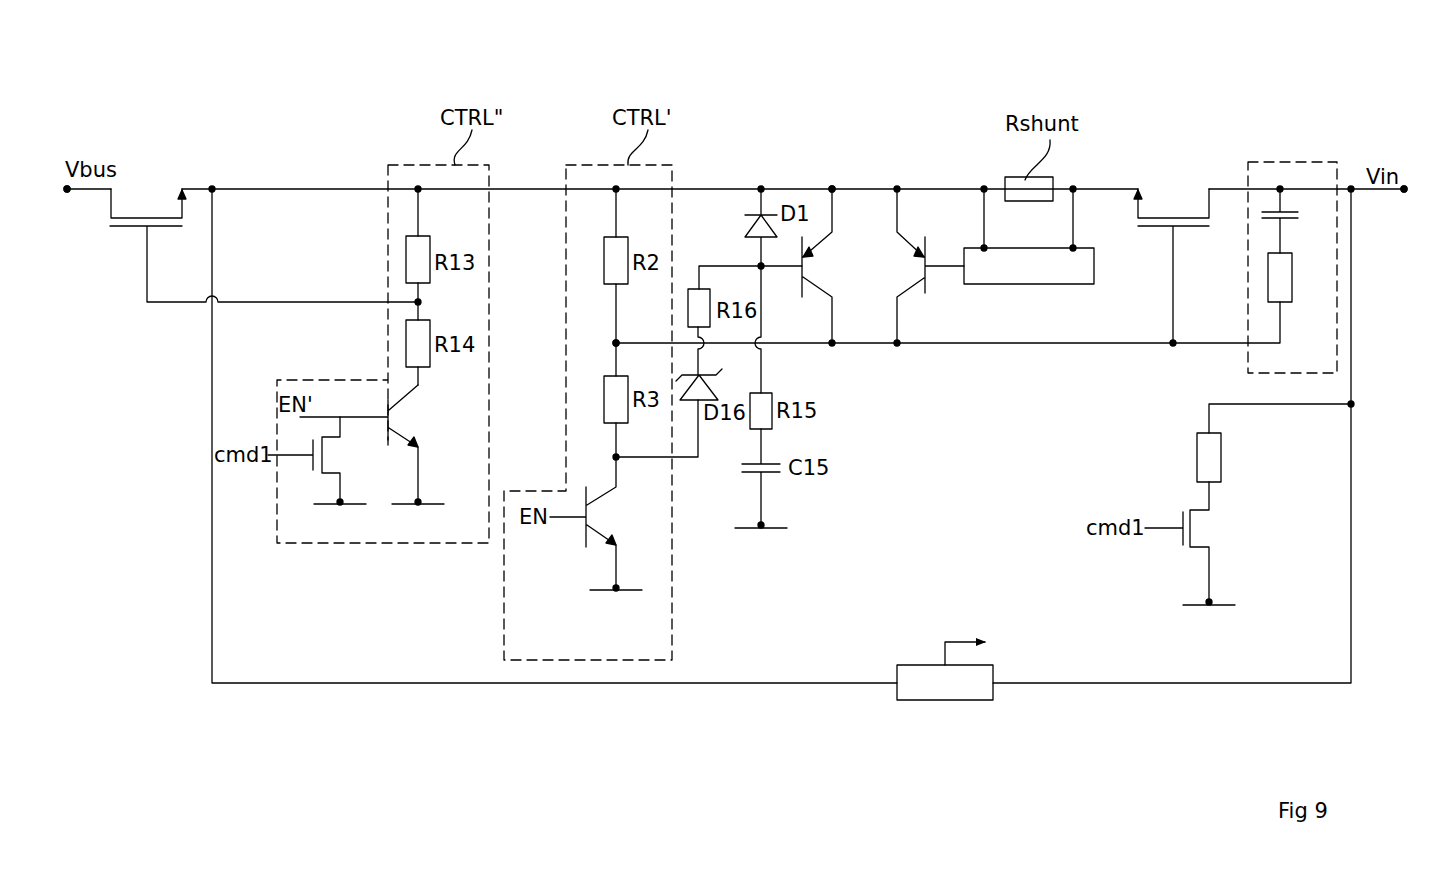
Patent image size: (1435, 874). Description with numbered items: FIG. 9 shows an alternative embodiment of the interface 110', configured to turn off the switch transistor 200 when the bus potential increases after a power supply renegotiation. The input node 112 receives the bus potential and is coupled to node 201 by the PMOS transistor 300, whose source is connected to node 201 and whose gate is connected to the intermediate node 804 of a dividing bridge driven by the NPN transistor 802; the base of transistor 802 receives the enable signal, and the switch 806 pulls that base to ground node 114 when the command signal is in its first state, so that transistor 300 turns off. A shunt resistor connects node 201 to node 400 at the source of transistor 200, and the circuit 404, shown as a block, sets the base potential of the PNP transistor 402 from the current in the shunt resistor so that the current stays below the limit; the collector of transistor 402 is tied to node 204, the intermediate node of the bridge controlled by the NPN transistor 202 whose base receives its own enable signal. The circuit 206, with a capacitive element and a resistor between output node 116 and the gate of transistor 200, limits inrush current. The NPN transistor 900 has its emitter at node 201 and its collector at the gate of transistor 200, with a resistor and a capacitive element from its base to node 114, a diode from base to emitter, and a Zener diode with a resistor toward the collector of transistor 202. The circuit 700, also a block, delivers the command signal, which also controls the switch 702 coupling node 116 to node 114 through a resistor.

The interface 110' is at (184, 71).
The node 112 is at (69, 194).
The node 116 is at (1404, 194).
The node 114 is at (338, 502).
The PMOS transistor 300 is at (143, 205).
The intermediate node 804 is at (421, 302).
The NPN transistor 802 is at (397, 417).
The switch 806 is at (306, 435).
The intermediate node 204 is at (618, 341).
The NPN transistor 202 is at (598, 516).
The node 201 is at (832, 186).
The NPN transistor 900 is at (817, 260).
The PNP transistor 402 is at (910, 292).
The node 400 is at (1075, 187).
The circuit 404 is at (1029, 236).
The transistor 200 is at (1170, 205).
The circuit 206 is at (1310, 162).
The switch 702 is at (1205, 528).
The circuit 700 is at (976, 665).